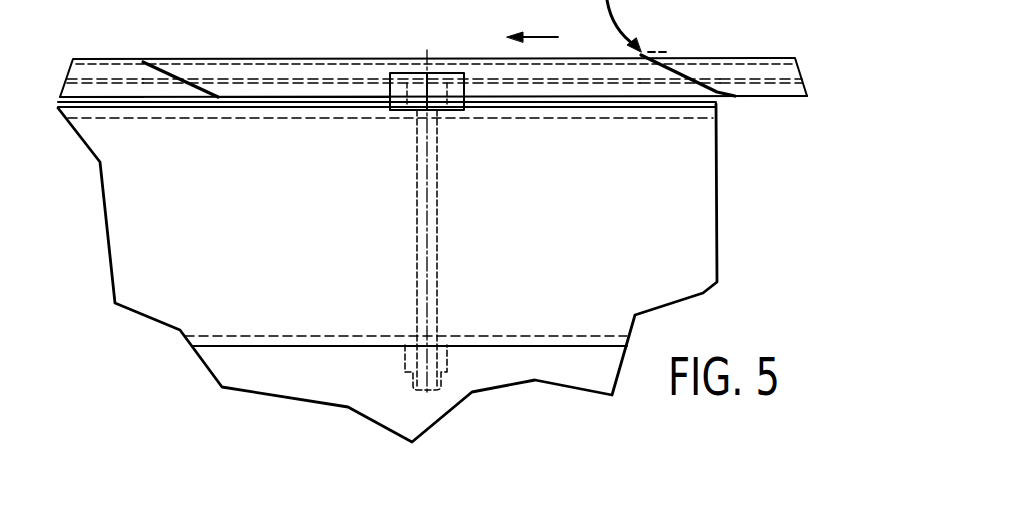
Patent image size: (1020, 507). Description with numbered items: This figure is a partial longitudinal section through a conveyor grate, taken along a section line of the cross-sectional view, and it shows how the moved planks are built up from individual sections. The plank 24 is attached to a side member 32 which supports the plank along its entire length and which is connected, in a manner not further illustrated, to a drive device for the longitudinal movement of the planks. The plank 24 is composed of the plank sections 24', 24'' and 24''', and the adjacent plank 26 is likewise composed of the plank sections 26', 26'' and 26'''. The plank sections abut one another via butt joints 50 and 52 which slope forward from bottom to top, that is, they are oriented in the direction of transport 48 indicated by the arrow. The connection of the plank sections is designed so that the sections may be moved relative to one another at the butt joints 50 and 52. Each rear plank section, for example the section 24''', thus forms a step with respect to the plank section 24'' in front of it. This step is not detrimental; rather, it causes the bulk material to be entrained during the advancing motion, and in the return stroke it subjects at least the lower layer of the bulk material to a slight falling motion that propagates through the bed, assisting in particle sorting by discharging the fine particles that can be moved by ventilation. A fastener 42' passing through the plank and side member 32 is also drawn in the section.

The plank 24 is at (387, 139).
The plank section 24' is at (101, 115).
The plank section 24'' is at (304, 124).
The plank section 24''' is at (769, 108).
The plank 26 is at (433, 49).
The plank section 26' is at (105, 41).
The plank section 26'' is at (429, 41).
The plank section 26''' is at (761, 49).
The side member 32 is at (253, 243).
The bolt fastener 42' is at (433, 196).
The direction of transport 48 is at (538, 36).
The butt joint 50 is at (183, 82).
The butt joint 52 is at (683, 73).